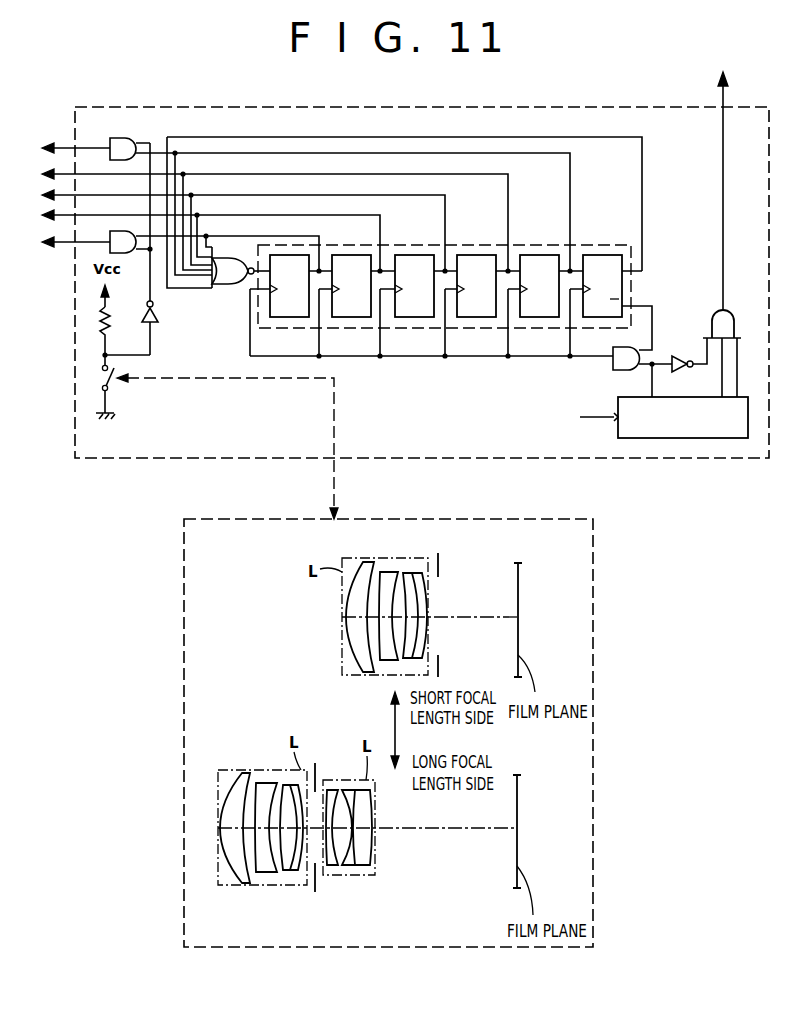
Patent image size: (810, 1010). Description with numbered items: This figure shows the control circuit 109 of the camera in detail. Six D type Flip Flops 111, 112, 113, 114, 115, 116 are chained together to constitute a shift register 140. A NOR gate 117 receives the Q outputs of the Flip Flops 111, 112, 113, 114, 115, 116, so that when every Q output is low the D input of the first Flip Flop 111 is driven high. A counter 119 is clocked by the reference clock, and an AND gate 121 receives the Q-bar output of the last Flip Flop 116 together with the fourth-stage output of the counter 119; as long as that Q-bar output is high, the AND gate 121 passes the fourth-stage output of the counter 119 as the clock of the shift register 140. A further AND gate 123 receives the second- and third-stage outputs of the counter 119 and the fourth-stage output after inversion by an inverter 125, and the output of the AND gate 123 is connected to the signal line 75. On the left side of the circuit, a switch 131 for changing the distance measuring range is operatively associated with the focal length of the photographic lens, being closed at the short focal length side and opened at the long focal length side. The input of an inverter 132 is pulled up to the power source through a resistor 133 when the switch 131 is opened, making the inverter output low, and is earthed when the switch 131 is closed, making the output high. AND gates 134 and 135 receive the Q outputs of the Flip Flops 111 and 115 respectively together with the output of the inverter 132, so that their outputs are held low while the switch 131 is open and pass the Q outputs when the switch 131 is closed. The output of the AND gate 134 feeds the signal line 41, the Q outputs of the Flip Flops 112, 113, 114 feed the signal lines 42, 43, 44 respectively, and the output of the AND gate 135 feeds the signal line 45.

The control circuit 109 is at (621, 107).
The signal line 75 is at (722, 181).
The signal line 45 is at (74, 148).
The signal line 44 is at (58, 174).
The signal line 43 is at (58, 195).
The signal line 42 is at (58, 215).
The signal line 41 is at (58, 242).
The AND gate 135 is at (124, 138).
The AND gate 134 is at (126, 254).
The resistor 133 is at (102, 316).
The inverter 132 is at (160, 318).
The switch 131 is at (116, 385).
The NOR gate 117 is at (223, 285).
The shift register 140 is at (603, 245).
The D type Flip Flop 111 is at (288, 318).
The D type Flip Flop 112 is at (350, 318).
The D type Flip Flop 113 is at (413, 318).
The D type Flip Flop 114 is at (475, 318).
The D type Flip Flop 115 is at (538, 318).
The D type Flip Flop 116 is at (603, 318).
The AND gate 121 is at (617, 371).
The inverter 125 is at (673, 355).
The AND gate 123 is at (733, 318).
The counter 119 is at (747, 397).